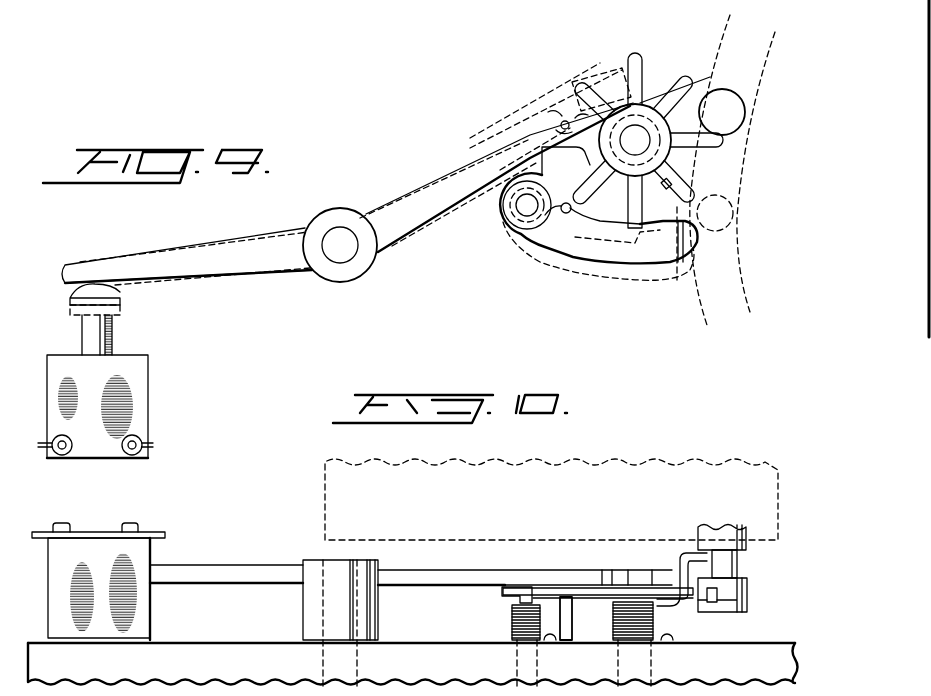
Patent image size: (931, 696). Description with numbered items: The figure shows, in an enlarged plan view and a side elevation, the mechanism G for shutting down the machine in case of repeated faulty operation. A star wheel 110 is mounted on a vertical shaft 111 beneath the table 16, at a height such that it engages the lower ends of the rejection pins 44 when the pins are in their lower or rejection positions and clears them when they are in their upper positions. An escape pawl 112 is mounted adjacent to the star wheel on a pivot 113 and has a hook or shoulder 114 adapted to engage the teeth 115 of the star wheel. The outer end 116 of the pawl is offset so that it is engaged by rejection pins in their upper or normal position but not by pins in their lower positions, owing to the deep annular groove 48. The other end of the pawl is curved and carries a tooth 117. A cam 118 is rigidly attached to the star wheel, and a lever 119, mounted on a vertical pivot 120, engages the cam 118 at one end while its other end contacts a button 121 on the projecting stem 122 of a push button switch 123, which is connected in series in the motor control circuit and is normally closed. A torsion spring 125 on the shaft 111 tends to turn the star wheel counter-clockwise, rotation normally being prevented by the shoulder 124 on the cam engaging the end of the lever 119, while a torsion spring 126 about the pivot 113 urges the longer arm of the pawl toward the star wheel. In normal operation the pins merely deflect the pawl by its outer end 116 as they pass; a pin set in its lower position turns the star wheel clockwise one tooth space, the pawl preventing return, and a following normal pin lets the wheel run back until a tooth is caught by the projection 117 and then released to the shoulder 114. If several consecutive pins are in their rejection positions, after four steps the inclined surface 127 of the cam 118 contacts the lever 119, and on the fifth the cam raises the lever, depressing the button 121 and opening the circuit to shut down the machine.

In FIG. 10, the table 16 is at (538, 540).
In FIG. 10, the rejection pins 44 is at (742, 527).
In FIG. 10, the deep annular groove 48 is at (740, 567).
In FIG. 9, the star wheel 110 is at (688, 152).
In FIG. 10, the star wheel 110 is at (710, 600).
In FIG. 9, the vertical shaft 111 is at (643, 128).
In FIG. 9, the escape pawl 112 is at (600, 265).
In FIG. 10, the escape pawl 112 is at (590, 596).
In FIG. 9, the pivot 113 is at (513, 220).
In FIG. 9, the hook or shoulder 114 is at (633, 224).
In FIG. 9, the teeth 115 is at (637, 60).
In FIG. 10, the teeth 115 is at (724, 598).
In FIG. 9, the outer end 116 is at (696, 254).
In FIG. 10, the outer end 116 is at (687, 553).
In FIG. 9, the tooth 117 is at (558, 118).
In FIG. 9, the cam 118 is at (707, 88).
In FIG. 10, the cam 118 is at (637, 575).
In FIG. 9, the lever 119 is at (410, 188).
In FIG. 9, the vertical pivot 120 is at (340, 210).
In FIG. 10, the vertical pivot 120 is at (310, 615).
In FIG. 9, the button 121 is at (121, 291).
In FIG. 9, the projecting stem 122 is at (112, 334).
In FIG. 9, the push button switch 123 is at (148, 398).
In FIG. 10, the push button switch 123 is at (153, 615).
In FIG. 9, the shoulder 124 is at (625, 97).
In FIG. 9, the torsion spring 125 is at (666, 190).
In FIG. 10, the torsion spring 125 is at (657, 620).
In FIG. 10, the torsion spring 126 is at (512, 618).
In FIG. 9, the inclined surface 127 is at (690, 172).
In FIG. 9, the mechanism G is at (403, 230).
In FIG. 10, the mechanism G is at (418, 578).